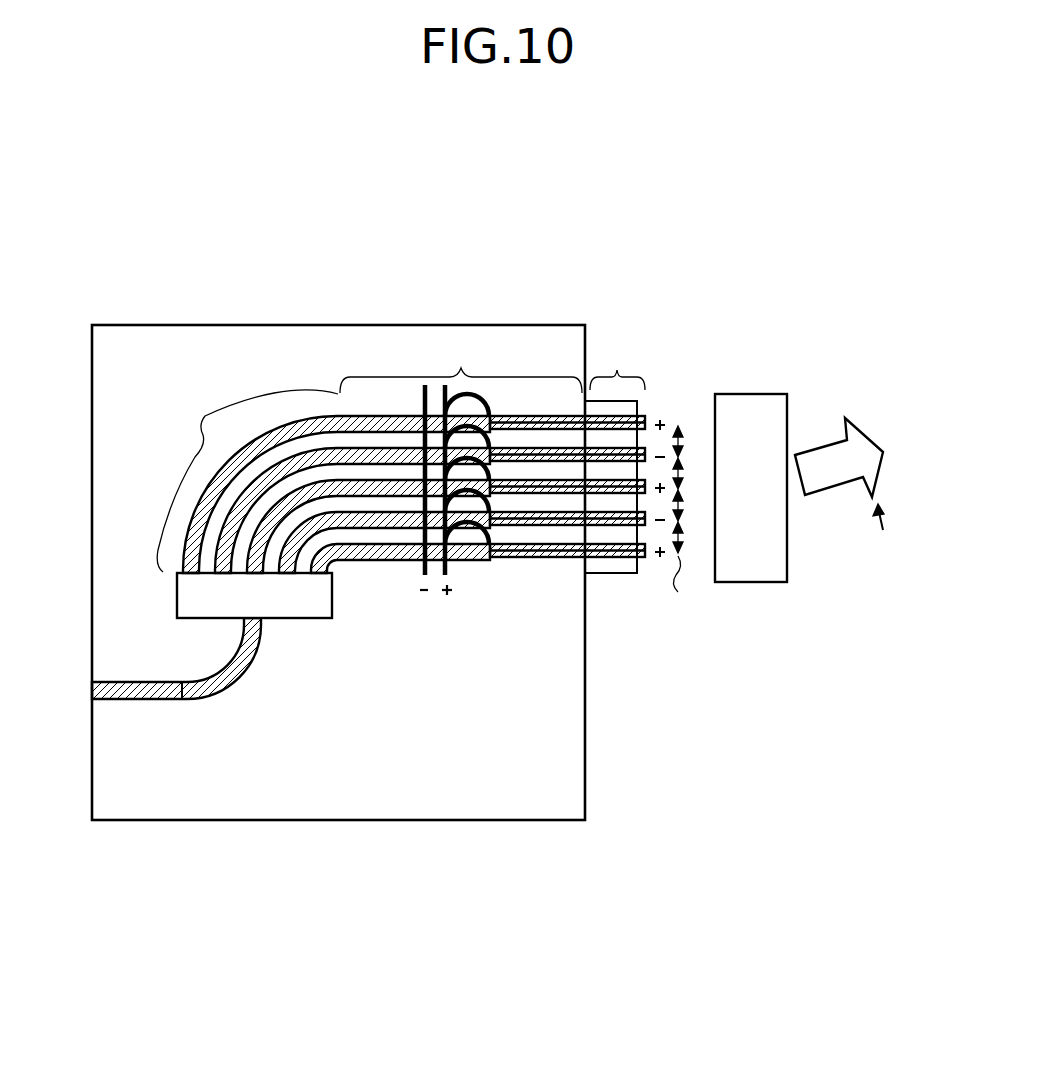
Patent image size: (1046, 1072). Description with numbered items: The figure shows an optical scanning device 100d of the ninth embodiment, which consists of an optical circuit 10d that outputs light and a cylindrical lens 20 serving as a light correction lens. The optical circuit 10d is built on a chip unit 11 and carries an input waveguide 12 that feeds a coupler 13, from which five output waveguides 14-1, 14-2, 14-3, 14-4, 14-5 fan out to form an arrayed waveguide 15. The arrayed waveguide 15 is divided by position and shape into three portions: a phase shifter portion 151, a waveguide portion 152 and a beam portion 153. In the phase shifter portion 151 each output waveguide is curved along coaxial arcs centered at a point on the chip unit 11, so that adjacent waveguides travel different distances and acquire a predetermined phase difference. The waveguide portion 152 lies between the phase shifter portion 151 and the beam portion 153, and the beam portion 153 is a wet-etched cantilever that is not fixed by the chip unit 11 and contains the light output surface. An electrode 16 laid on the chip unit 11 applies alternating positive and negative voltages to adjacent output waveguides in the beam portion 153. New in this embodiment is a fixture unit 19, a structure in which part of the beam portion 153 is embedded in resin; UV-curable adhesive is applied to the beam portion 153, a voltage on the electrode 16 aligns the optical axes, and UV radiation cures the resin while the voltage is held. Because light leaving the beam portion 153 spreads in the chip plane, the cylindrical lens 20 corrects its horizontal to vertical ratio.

The optical scanning device 100d is at (756, 159).
The optical circuit 10d is at (645, 234).
The chip unit 11 is at (565, 820).
The input waveguide 12 is at (147, 699).
The coupler 13 is at (288, 618).
The output waveguide 14-1 is at (405, 553).
The output waveguide 14-2 is at (395, 521).
The output waveguide 14-3 is at (385, 489).
The output waveguide 14-4 is at (370, 457).
The output waveguide 14-5 is at (355, 425).
The arrayed waveguide 15 is at (248, 286).
The phase shifter portion 151 is at (205, 416).
The waveguide portion 152 is at (461, 368).
The beam portion 153 is at (617, 370).
The electrode 16 is at (412, 590).
The fixture unit 19 is at (612, 573).
The cylindrical lens 20 is at (753, 582).